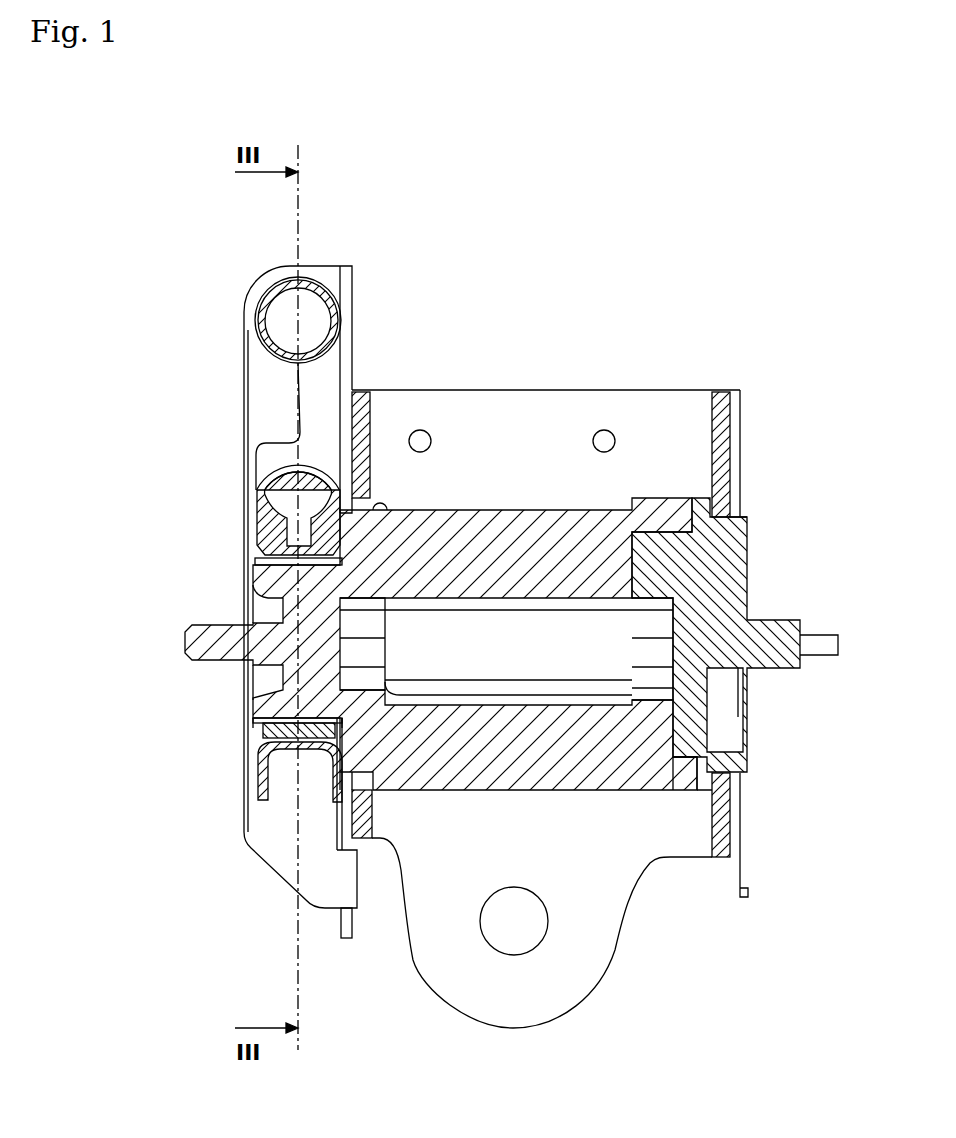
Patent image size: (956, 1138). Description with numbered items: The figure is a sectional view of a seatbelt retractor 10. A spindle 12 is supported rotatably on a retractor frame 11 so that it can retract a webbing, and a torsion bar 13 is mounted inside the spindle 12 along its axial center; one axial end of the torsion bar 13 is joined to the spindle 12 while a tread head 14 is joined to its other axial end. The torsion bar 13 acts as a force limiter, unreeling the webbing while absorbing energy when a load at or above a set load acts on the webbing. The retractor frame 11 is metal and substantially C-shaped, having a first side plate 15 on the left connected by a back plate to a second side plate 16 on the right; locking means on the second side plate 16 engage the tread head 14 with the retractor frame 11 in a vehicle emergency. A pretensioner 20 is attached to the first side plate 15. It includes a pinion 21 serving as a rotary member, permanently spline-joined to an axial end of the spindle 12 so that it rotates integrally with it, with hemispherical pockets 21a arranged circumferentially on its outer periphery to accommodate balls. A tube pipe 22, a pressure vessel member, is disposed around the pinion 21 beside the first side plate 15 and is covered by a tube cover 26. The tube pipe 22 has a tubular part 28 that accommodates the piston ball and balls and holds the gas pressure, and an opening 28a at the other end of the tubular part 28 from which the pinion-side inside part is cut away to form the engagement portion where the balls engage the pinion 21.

The seatbelt retractor 10 is at (511, 603).
The retractor frame 11 is at (582, 593).
The spindle 12 is at (530, 540).
The torsion bar 13 is at (595, 660).
The tread head 14 is at (712, 562).
The first side plate 15 is at (363, 428).
The second side plate 16 is at (721, 456).
The pretensioner 20 is at (287, 569).
The pinion 21 is at (260, 536).
The hemispherical pockets 21a is at (282, 770).
The tube pipe 22 is at (315, 412).
The tube cover 26 is at (256, 409).
The tubular part 28 is at (327, 276).
The opening 28a is at (288, 494).